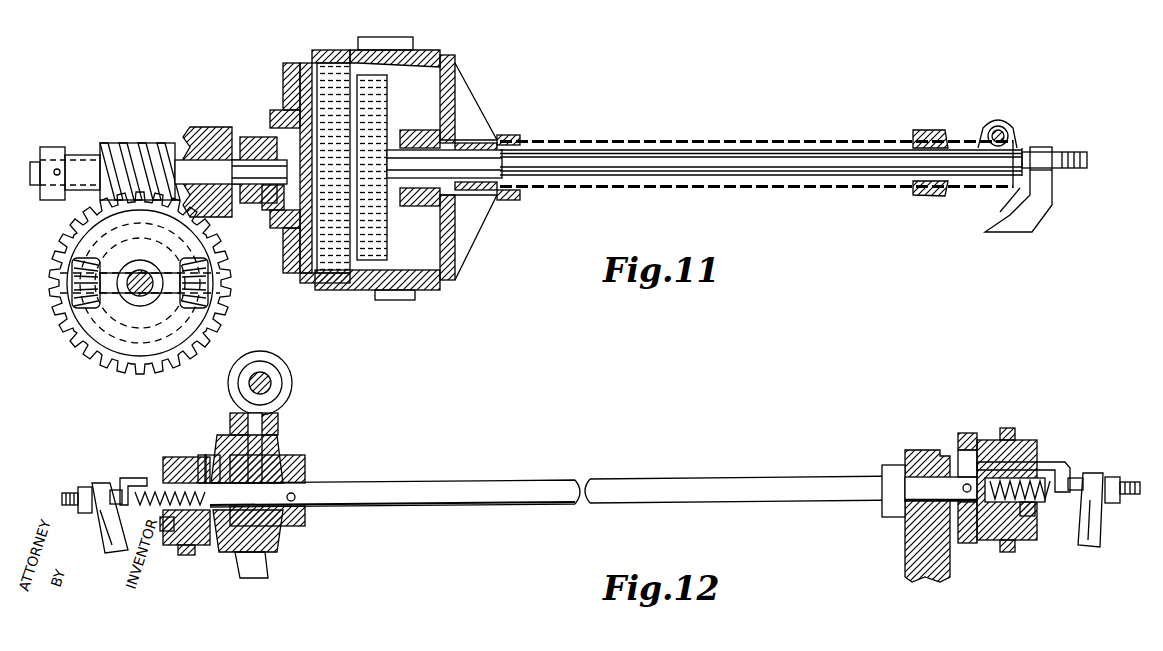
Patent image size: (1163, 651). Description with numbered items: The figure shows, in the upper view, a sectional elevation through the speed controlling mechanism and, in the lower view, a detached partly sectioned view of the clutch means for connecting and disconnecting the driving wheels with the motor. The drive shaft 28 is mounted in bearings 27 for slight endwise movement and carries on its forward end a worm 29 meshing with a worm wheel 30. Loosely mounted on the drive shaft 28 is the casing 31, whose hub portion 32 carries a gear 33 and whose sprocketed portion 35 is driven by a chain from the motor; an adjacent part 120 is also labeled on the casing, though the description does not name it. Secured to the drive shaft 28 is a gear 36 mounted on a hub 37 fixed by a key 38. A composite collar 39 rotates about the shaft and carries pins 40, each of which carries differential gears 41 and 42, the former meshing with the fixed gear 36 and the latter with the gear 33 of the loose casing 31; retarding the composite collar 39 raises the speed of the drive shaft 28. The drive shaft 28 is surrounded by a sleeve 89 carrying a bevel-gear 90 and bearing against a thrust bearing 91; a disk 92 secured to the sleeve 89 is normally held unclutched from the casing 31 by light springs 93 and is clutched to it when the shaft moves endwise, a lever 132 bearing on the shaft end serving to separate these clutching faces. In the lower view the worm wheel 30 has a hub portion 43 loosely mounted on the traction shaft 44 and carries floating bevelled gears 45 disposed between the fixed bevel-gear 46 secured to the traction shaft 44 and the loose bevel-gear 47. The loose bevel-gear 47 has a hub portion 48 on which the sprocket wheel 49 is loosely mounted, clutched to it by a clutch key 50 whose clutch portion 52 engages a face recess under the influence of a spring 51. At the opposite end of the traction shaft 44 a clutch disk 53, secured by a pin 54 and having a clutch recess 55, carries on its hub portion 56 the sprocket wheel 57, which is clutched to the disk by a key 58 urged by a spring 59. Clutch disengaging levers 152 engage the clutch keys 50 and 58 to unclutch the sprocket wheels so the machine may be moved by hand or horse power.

In FIG. 11, the bearings 27 is at (203, 133).
In FIG. 11, the drive shaft 28 is at (580, 152).
In FIG. 11, the worm 29 is at (120, 150).
In FIG. 12, the worm 29 is at (292, 383).
In FIG. 11, the worm wheel 30 is at (104, 366).
In FIG. 12, the worm wheel 30 is at (280, 420).
In FIG. 11, the casing 31 is at (420, 54).
In FIG. 11, the hub portion 32 is at (432, 142).
In FIG. 11, the gear 33 is at (408, 157).
In FIG. 11, the sprocketed portion 35 is at (386, 38).
In FIG. 11, the gear 36 is at (268, 212).
In FIG. 11, the hub 37 is at (285, 122).
In FIG. 11, the key 38 is at (250, 140).
In FIG. 11, the composite collar 39 is at (310, 285).
In FIG. 11, the pins 40 is at (292, 62).
In FIG. 11, the differential gear 41 is at (325, 62).
In FIG. 11, the differential gear 42 is at (370, 76).
In FIG. 12, the hub portion 43 is at (258, 476).
In FIG. 11, the traction shaft 44 is at (145, 300).
In FIG. 12, the traction shaft 44 is at (497, 480).
In FIG. 11, the floating bevelled gears 45 is at (75, 318).
In FIG. 12, the floating bevelled gears 45 is at (284, 448).
In FIG. 12, the fixed bevel-gear 46 is at (284, 536).
In FIG. 12, the loose bevel-gear 47 is at (208, 455).
In FIG. 12, the hub portion 48 is at (175, 547).
In FIG. 12, the sprocket wheel 49 is at (172, 457).
In FIG. 12, the clutch key 50 is at (140, 478).
In FIG. 12, the spring 51 is at (137, 508).
In FIG. 12, the clutch portion 52 is at (202, 455).
In FIG. 12, the clutch disk 53 is at (963, 545).
In FIG. 12, the pin 54 is at (963, 484).
In FIG. 12, the clutch recess 55 is at (966, 470).
In FIG. 12, the hub portion 56 is at (1030, 517).
In FIG. 12, the sprocket wheel 57 is at (1015, 446).
In FIG. 12, the key 58 is at (1010, 465).
In FIG. 12, the spring 59 is at (1048, 500).
In FIG. 11, the sleeve 89 is at (742, 140).
In FIG. 11, the bevel-gear 90 is at (932, 130).
In FIG. 11, the thrust bearing 91 is at (985, 130).
In FIG. 11, the disk 92 is at (456, 66).
In FIG. 11, the light springs 93 is at (505, 146).
In FIG. 11, the cap 120 is at (333, 50).
In FIG. 11, the lever 132 is at (1050, 194).
In FIG. 12, the clutch disengaging levers 152 is at (75, 492).